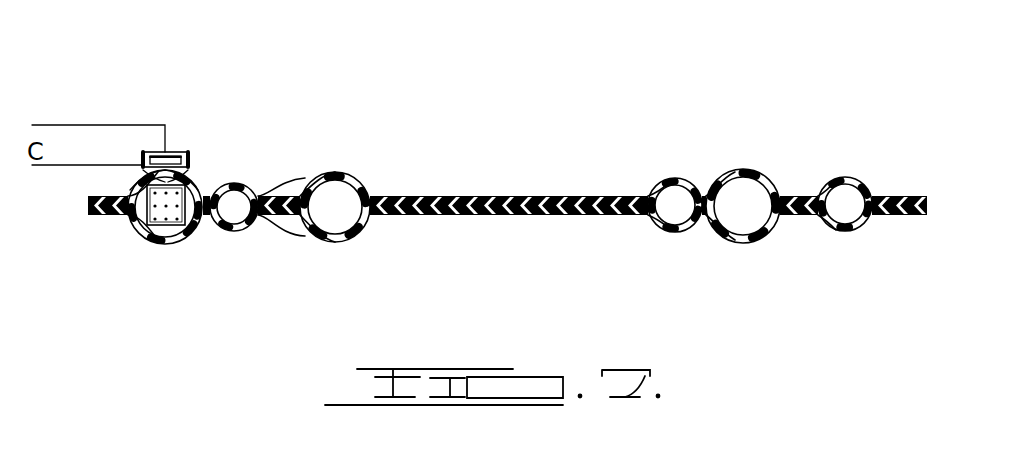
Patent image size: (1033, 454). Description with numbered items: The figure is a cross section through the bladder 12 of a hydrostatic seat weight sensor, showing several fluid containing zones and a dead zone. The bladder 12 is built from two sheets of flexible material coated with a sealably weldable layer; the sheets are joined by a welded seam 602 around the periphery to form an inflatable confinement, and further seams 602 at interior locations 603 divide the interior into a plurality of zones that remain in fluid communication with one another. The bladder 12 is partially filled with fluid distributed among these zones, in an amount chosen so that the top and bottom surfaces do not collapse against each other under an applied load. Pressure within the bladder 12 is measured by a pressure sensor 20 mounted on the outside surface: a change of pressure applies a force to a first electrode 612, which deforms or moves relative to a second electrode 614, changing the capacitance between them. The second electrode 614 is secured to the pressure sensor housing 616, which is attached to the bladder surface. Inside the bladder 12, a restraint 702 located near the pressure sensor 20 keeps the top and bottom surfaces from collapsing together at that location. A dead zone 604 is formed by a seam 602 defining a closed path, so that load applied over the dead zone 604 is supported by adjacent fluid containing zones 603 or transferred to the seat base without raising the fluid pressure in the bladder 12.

The pressure sensor 20 is at (143, 155).
The bladder 12 is at (845, 186).
The welded seam 602 is at (540, 196).
The fluid containing zone 603 is at (242, 204).
The dead zone 604 is at (460, 216).
The first electrode 612 is at (193, 164).
The second electrode 614 is at (165, 155).
The pressure sensor housing 616 is at (185, 160).
The restraint 702 is at (152, 232).